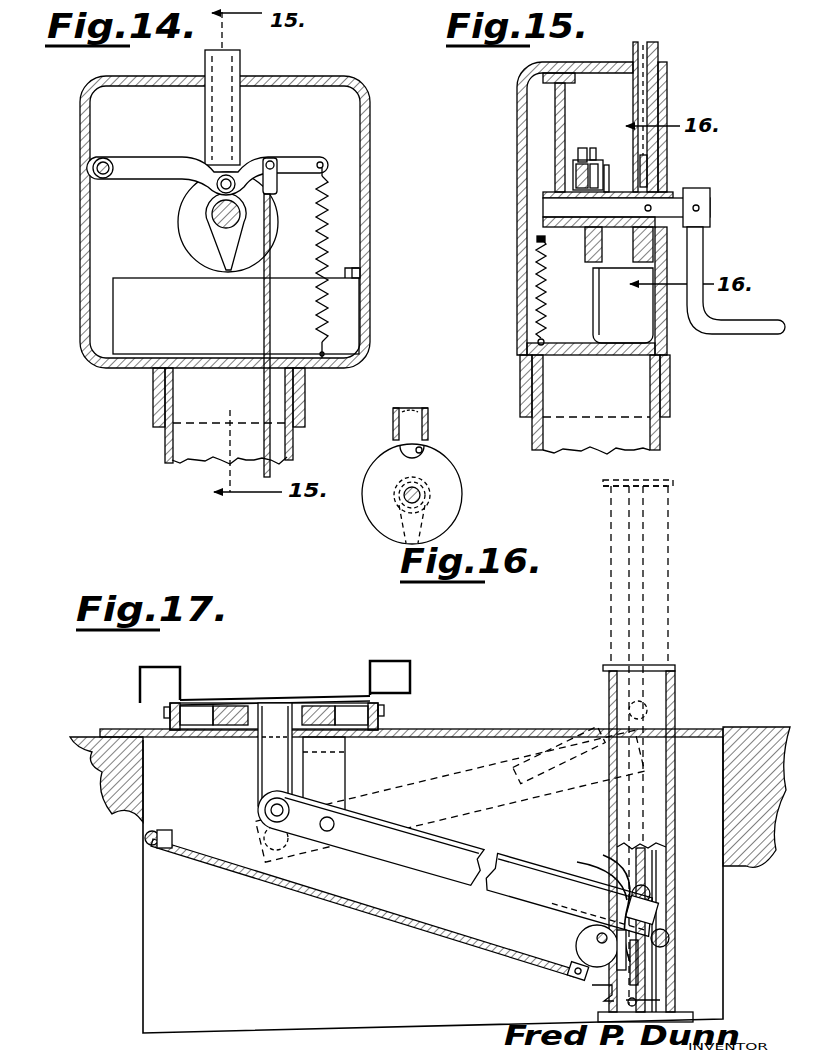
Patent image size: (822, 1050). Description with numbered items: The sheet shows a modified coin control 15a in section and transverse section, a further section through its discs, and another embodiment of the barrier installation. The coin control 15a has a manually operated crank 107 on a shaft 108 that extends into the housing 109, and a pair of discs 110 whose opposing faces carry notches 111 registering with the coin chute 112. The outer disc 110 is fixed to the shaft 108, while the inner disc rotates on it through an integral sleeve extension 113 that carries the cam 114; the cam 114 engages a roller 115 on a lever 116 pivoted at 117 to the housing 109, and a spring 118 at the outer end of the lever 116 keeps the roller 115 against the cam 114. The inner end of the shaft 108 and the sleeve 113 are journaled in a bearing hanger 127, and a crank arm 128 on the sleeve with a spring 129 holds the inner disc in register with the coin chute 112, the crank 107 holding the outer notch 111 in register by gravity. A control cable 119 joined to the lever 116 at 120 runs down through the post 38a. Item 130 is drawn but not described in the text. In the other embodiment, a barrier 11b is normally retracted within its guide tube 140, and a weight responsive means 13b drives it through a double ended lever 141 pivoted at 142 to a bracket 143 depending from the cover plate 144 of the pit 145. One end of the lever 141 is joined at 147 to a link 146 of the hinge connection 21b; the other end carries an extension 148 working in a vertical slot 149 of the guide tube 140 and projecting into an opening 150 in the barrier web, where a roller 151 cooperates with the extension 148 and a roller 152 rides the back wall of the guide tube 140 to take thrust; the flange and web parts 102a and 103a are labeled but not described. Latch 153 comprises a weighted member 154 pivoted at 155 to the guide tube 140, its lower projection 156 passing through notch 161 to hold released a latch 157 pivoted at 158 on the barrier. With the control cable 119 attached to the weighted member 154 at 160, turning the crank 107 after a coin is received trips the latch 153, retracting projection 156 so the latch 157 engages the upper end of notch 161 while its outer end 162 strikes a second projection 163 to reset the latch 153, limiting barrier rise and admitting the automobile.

In FIG. 15, the crank 107 is at (744, 336).
In FIG. 14, the shaft 108 is at (214, 218).
In FIG. 15, the shaft 108 is at (672, 200).
In FIG. 16, the shaft 108 is at (419, 497).
In FIG. 14, the housing 109 is at (86, 228).
In FIG. 15, the housing 109 is at (519, 130).
In FIG. 14, the discs 110 is at (196, 258).
In FIG. 15, the discs 110 is at (668, 241).
In FIG. 16, the discs 110 is at (455, 482).
In FIG. 15, the notches 111 is at (652, 166).
In FIG. 16, the notches 111 is at (421, 449).
In FIG. 15, the coin chute 112 is at (668, 93).
In FIG. 16, the coin chute 112 is at (430, 419).
In FIG. 15, the sleeve extension 113 is at (607, 190).
In FIG. 14, the cam 114 is at (222, 240).
In FIG. 15, the cam 114 is at (584, 260).
In FIG. 14, the roller 115 is at (210, 196).
In FIG. 15, the roller 115 is at (578, 170).
In FIG. 14, the lever 116 is at (153, 158).
In FIG. 15, the lever 116 is at (574, 182).
In FIG. 14, the pivot 117 is at (104, 158).
In FIG. 14, the spring 118 is at (331, 231).
In FIG. 14, the control cable 119 is at (264, 319).
In FIG. 17, the control cable 119 is at (384, 918).
In FIG. 14, the cable connection 120 is at (272, 160).
In FIG. 15, the bearing hanger 127 is at (556, 116).
In FIG. 15, the crank arm 128 is at (537, 238).
In FIG. 15, the spring 129 is at (538, 283).
In FIG. 14, the switch box 130 is at (118, 319).
In FIG. 15, the switch box 130 is at (623, 305).
In FIG. 14, the coin control 15a is at (372, 147).
In FIG. 15, the coin control 15a is at (670, 75).
In FIG. 14, the post 38a is at (166, 441).
In FIG. 17, the barrier 11b is at (665, 583).
In FIG. 17, the weight responsive means 13b is at (388, 661).
In FIG. 17, the hinge connection 21b is at (315, 702).
In FIG. 17, the base 102a is at (657, 963).
In FIG. 17, the rod 103a is at (646, 853).
In FIG. 17, the guide tube 140 is at (676, 697).
In FIG. 17, the double ended lever 141 is at (436, 877).
In FIG. 17, the pivot 142 is at (328, 832).
In FIG. 17, the bracket 143 is at (332, 770).
In FIG. 17, the cover plate 144 is at (488, 728).
In FIG. 17, the pit 145 is at (433, 885).
In FIG. 17, the link 146 is at (258, 761).
In FIG. 17, the link connection 147 is at (268, 806).
In FIG. 17, the extension 148 is at (590, 896).
In FIG. 17, the vertical slot 149 is at (612, 804).
In FIG. 17, the opening 150 is at (650, 893).
In FIG. 17, the roller 151 is at (652, 885).
In FIG. 17, the roller 152 is at (664, 934).
In FIG. 17, the latch 153 is at (576, 938).
In FIG. 17, the weighted member 154 is at (576, 948).
In FIG. 17, the pivot 155 is at (600, 937).
In FIG. 17, the lower projection 156 is at (640, 993).
In FIG. 17, the latch 157 is at (633, 983).
In FIG. 17, the pivot mount 158 is at (628, 1003).
In FIG. 17, the cable attachment 160 is at (570, 975).
In FIG. 17, the notch 161 is at (670, 943).
In FIG. 17, the outer end 162 is at (650, 915).
In FIG. 17, the second projection 163 is at (616, 858).